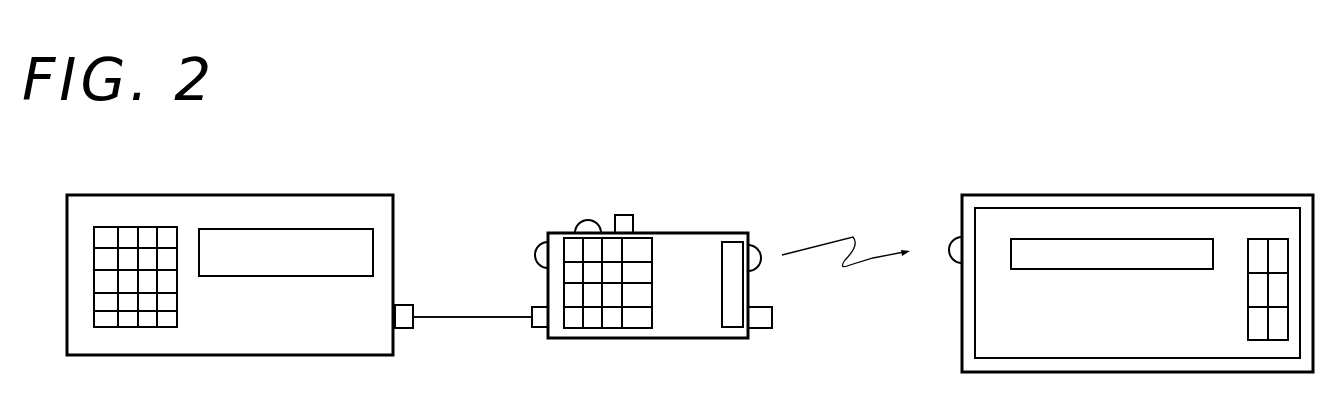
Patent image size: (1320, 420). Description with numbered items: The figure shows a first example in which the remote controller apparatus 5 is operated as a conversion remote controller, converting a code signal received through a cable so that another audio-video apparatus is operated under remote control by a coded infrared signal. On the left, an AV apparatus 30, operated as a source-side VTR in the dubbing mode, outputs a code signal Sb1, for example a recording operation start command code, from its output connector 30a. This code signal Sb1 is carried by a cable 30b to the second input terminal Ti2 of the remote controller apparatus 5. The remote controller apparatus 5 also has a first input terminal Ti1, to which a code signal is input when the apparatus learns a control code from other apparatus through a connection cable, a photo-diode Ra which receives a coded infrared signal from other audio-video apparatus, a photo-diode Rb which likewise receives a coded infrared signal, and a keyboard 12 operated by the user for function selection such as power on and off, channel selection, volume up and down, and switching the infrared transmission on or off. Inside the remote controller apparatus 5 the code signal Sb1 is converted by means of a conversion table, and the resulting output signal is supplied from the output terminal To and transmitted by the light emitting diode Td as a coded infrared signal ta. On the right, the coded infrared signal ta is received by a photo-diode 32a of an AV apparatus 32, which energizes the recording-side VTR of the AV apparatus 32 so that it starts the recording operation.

The AV apparatus 30 is at (286, 182).
The output connector 30a is at (402, 306).
The cable 30b is at (460, 318).
The code signal Sb1 is at (472, 304).
The remote controller apparatus 5 is at (694, 228).
The keyboard 12 is at (662, 307).
The photo-diode Ra is at (588, 221).
The photo-diode Rb is at (540, 247).
The first input terminal Ti1 is at (626, 215).
The second input terminal Ti2 is at (545, 328).
The light emitting diode Td is at (762, 250).
The output terminal To is at (760, 328).
The coded infrared signal ta is at (846, 266).
The AV apparatus 32 is at (1114, 186).
The photo-diode 32a is at (952, 264).